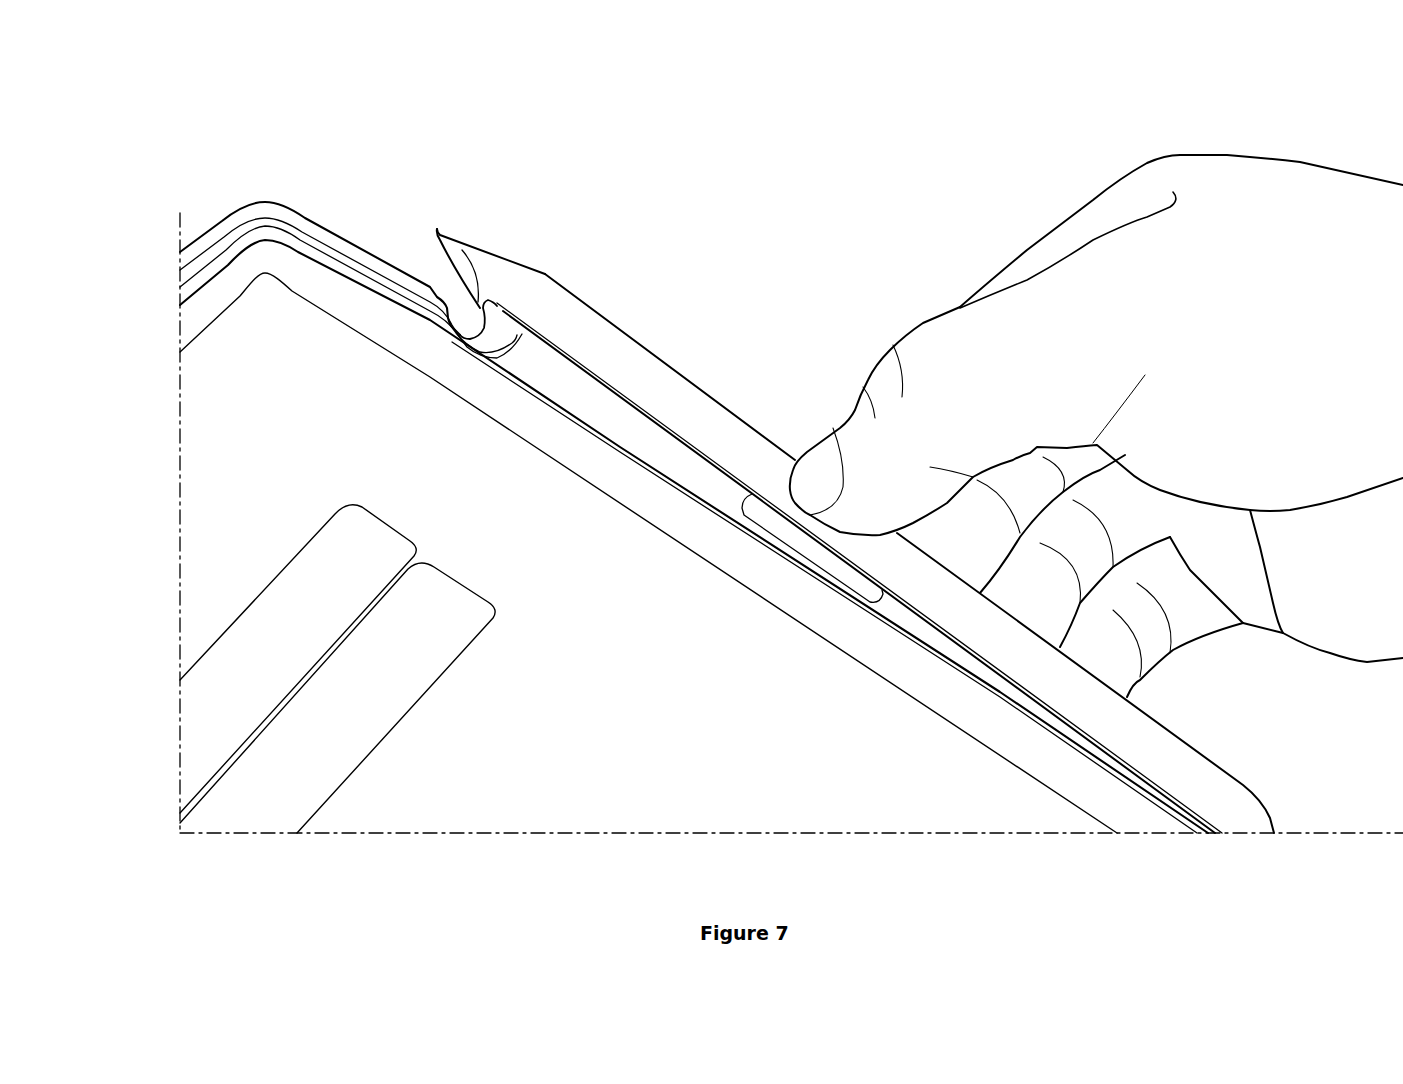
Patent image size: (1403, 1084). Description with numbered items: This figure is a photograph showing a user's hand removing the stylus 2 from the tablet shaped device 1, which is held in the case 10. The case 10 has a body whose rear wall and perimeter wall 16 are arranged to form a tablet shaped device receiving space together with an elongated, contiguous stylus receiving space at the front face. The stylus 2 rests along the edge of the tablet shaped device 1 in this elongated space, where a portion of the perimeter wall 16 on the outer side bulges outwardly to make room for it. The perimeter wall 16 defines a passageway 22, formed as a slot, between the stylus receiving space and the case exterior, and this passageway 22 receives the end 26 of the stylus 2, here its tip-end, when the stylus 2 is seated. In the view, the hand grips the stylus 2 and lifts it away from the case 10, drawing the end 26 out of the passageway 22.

The tablet shaped device 1 is at (631, 697).
The stylus 2 is at (708, 410).
The case 10 is at (202, 155).
The perimeter wall 16 is at (261, 208).
The passageway 22 is at (458, 301).
The end of the stylus 26 is at (498, 270).